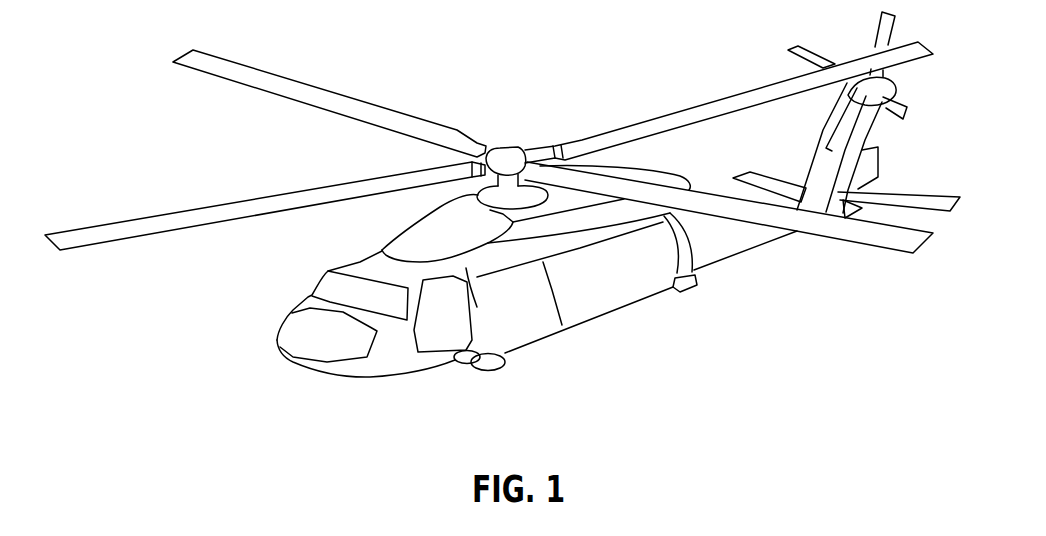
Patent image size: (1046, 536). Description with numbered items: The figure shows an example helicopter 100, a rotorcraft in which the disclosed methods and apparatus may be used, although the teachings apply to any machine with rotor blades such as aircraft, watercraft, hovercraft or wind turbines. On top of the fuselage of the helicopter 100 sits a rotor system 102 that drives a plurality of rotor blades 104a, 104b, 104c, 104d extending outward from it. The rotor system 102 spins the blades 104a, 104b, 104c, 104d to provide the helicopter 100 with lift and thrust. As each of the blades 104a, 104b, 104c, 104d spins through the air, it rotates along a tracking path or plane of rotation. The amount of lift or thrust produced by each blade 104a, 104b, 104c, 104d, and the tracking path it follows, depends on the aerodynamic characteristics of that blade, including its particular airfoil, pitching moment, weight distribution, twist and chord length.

The helicopter 100 is at (303, 368).
The rotor system 102 is at (497, 149).
The rotor blade 104a is at (194, 52).
The rotor blade 104b is at (88, 218).
The rotor blade 104c is at (893, 251).
The rotor blade 104d is at (661, 114).